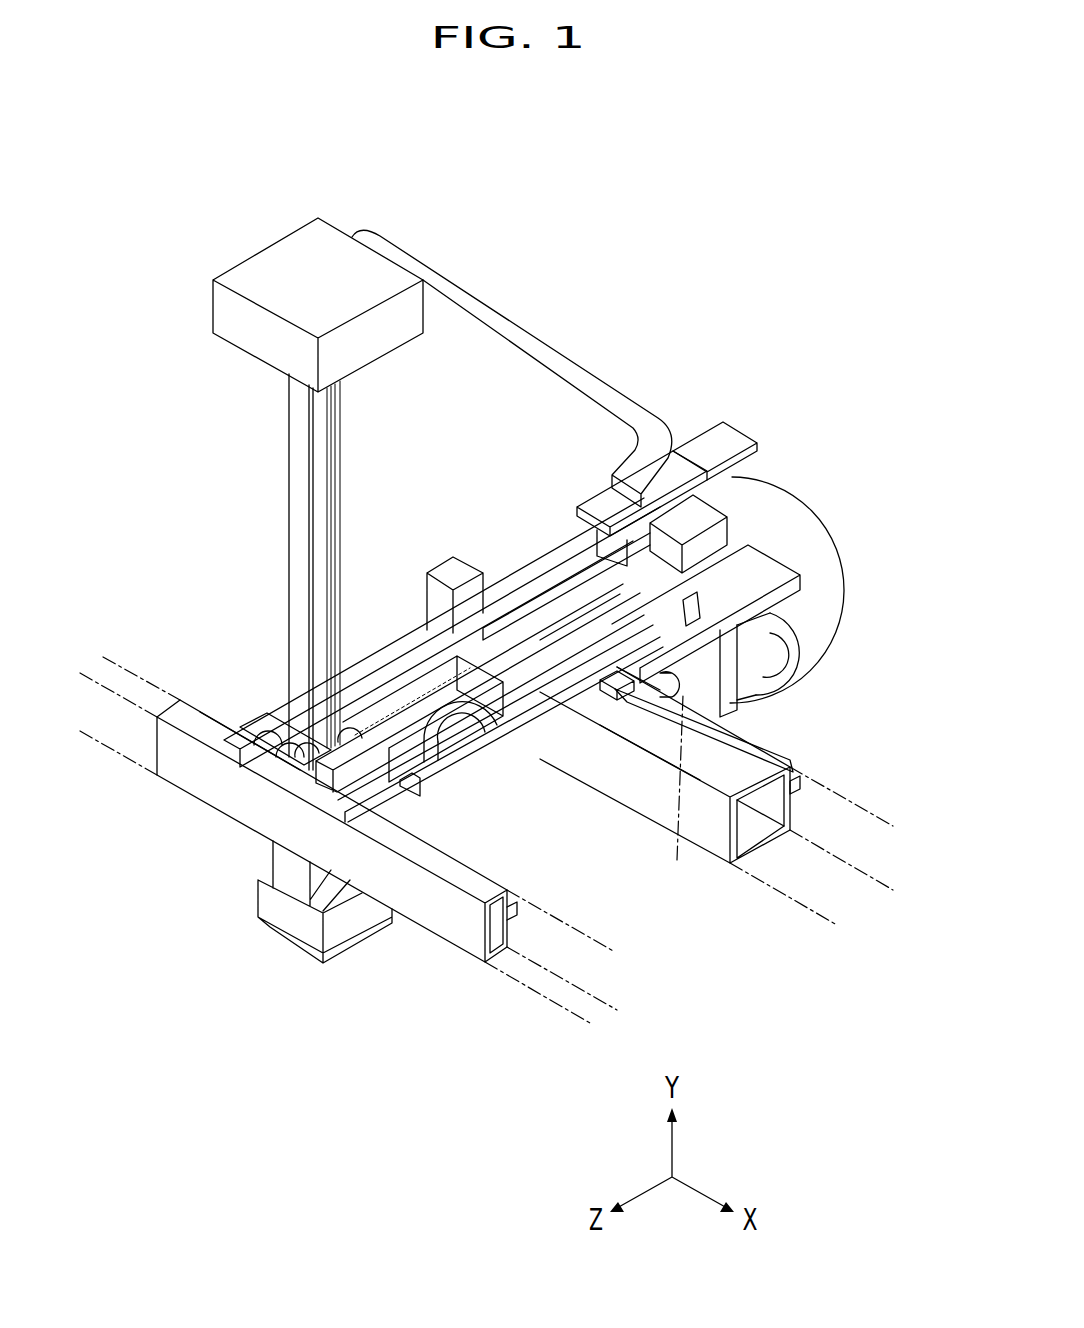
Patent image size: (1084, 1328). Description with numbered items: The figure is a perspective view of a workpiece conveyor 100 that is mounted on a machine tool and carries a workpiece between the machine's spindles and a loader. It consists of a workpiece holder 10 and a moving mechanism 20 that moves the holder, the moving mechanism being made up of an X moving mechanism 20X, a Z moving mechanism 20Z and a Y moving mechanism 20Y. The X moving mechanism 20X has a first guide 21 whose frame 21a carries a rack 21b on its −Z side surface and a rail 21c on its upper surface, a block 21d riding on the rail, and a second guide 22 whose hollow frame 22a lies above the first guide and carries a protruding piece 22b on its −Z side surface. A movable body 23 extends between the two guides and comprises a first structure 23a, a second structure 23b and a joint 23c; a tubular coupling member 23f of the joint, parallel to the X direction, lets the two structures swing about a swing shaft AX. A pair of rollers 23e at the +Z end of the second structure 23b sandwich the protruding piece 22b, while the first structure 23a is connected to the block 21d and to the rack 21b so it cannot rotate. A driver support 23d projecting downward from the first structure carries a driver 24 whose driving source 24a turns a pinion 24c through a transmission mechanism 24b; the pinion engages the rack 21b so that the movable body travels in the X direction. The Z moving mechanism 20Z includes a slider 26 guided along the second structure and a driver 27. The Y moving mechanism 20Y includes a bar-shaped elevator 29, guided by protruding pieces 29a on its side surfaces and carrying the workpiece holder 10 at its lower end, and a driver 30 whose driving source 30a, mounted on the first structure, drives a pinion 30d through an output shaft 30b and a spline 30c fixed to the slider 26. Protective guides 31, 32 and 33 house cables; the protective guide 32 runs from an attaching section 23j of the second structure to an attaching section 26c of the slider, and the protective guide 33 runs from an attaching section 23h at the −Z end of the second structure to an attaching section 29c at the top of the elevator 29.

The workpiece conveyor 100 is at (707, 194).
The workpiece holder 10 is at (314, 950).
The moving mechanism 20 is at (748, 376).
The X moving mechanism 20X is at (805, 578).
The Y moving mechanism 20Y is at (267, 468).
The Z moving mechanism 20Z is at (331, 790).
The first guide 21 is at (770, 852).
The frame 21a is at (707, 845).
The rack 21b is at (800, 788).
The rail 21c is at (780, 835).
The block 21d is at (636, 750).
The second guide 22 is at (213, 808).
The frame 22a is at (200, 720).
The protruding piece 22b is at (505, 925).
The movable body 23 is at (524, 577).
The first structure 23a is at (775, 570).
The second structure 23b is at (557, 717).
The joint 23c is at (585, 676).
The driver support 23d is at (742, 648).
The rollers 23e is at (262, 735).
The coupling member 23f is at (617, 702).
The attaching section 23h is at (700, 452).
The attaching section 23j is at (430, 790).
The driver 24 is at (886, 680).
The driving source 24a is at (790, 665).
The transmission mechanism 24b is at (770, 700).
The pinion 24c is at (740, 735).
The slider 26 is at (410, 668).
The attaching section 26c is at (465, 757).
The driver 27 is at (438, 560).
The elevator 29 is at (295, 440).
The protruding pieces 29a is at (338, 442).
The attaching section 29c is at (318, 240).
The driver 30 is at (718, 503).
The driving source 30a is at (605, 516).
The output shaft 30b is at (560, 600).
The spline 30c is at (345, 735).
The pinion 30d is at (313, 750).
The protective guide 31 is at (825, 566).
The protective guide 32 is at (475, 748).
The protective guide 33 is at (530, 346).
The swing shaft AX is at (672, 794).